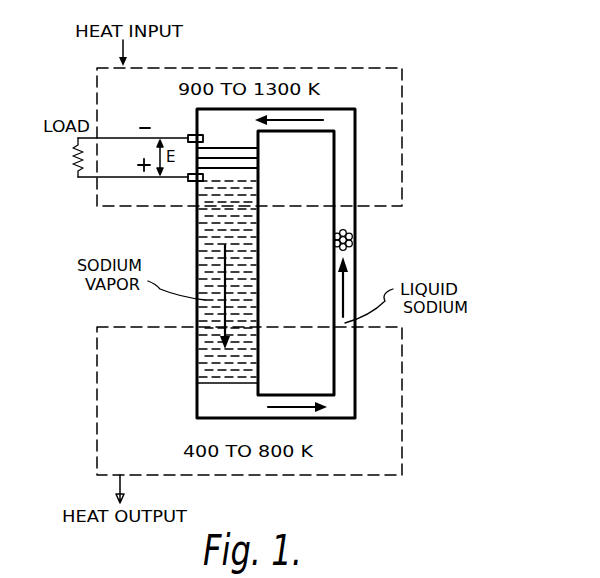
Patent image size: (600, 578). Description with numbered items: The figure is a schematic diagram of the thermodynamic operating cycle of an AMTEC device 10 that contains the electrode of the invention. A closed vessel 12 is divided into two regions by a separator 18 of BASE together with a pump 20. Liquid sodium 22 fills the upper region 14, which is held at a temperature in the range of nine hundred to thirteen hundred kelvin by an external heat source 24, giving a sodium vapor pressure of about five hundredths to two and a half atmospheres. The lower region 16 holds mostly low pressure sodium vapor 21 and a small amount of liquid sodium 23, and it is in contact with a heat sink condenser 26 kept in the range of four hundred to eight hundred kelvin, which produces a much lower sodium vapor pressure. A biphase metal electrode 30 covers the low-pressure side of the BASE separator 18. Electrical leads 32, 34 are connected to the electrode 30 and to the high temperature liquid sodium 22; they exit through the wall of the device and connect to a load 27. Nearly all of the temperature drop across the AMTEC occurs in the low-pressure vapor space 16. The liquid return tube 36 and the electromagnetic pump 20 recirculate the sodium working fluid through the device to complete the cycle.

The AMTEC device 10 is at (208, 224).
The closed vessel 12 is at (260, 240).
The upper region 14 is at (236, 134).
The lower region 16 is at (236, 231).
The separator 18 is at (248, 152).
The pump 20 is at (354, 239).
The low pressure sodium vapor 21 is at (232, 337).
The liquid sodium 22 is at (206, 118).
The liquid sodium 23 is at (207, 395).
The external heat source 24 is at (402, 152).
The heat sink condenser 26 is at (402, 415).
The load 27 is at (73, 150).
The biphase metal electrode 30 is at (248, 165).
The electrical lead 32 is at (125, 148).
The electrical lead 34 is at (80, 178).
The liquid return tube 36 is at (356, 178).